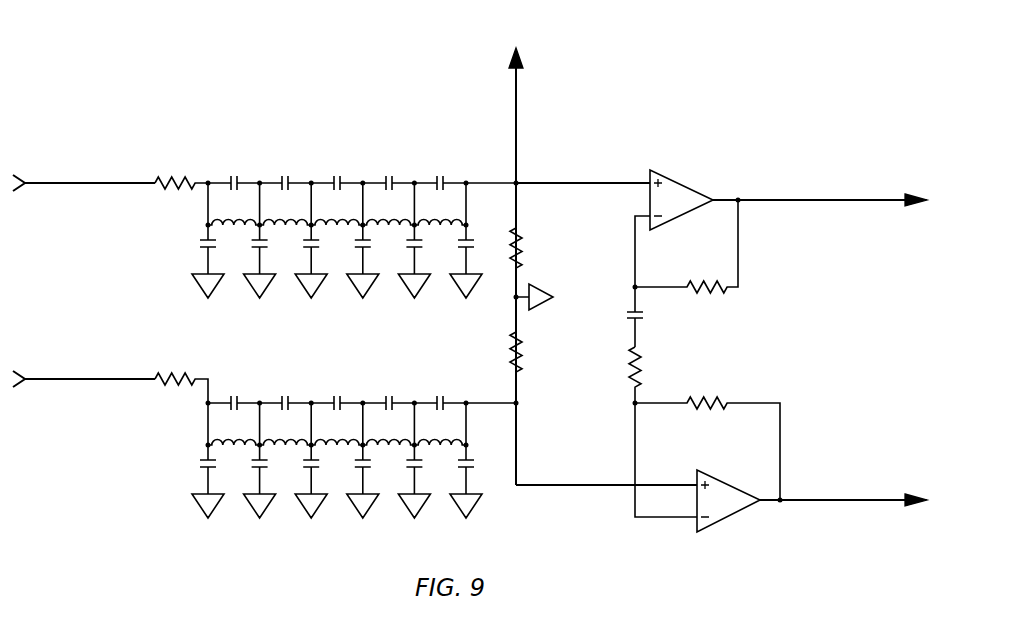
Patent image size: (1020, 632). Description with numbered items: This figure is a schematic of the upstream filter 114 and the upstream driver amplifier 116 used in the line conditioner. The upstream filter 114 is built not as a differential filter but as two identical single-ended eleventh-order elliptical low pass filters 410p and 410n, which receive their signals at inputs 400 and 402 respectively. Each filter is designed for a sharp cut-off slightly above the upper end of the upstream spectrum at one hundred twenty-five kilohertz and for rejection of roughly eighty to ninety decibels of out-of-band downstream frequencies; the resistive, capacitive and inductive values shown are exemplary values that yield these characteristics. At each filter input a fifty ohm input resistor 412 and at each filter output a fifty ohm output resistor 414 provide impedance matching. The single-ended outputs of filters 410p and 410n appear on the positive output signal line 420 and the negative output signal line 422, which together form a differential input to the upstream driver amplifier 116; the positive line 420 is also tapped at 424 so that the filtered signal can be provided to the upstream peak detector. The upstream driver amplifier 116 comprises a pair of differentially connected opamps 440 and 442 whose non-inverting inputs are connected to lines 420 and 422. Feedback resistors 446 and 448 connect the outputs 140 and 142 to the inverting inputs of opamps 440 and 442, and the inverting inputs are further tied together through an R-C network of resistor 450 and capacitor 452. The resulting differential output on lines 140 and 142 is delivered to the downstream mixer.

The positive input 400 is at (82, 183).
The negative input 402 is at (82, 379).
The elliptical low pass filter 410p is at (270, 100).
The elliptical low pass filter 410n is at (210, 343).
The input resistor 412 is at (165, 192).
The output resistor 414 is at (516, 232).
The positive output signal line 420 is at (605, 183).
The negative output signal line 422 is at (668, 520).
The tap 424 is at (516, 105).
The opamp 440 is at (678, 178).
The opamp 442 is at (730, 515).
The feedback resistor 446 is at (722, 292).
The feedback resistor 448 is at (705, 410).
The resistor 450 is at (628, 357).
The capacitor 452 is at (640, 320).
The output line 140 is at (877, 200).
The output line 142 is at (845, 500).
The upstream filter 114 is at (318, 433).
The upstream driver amplifier 116 is at (775, 486).